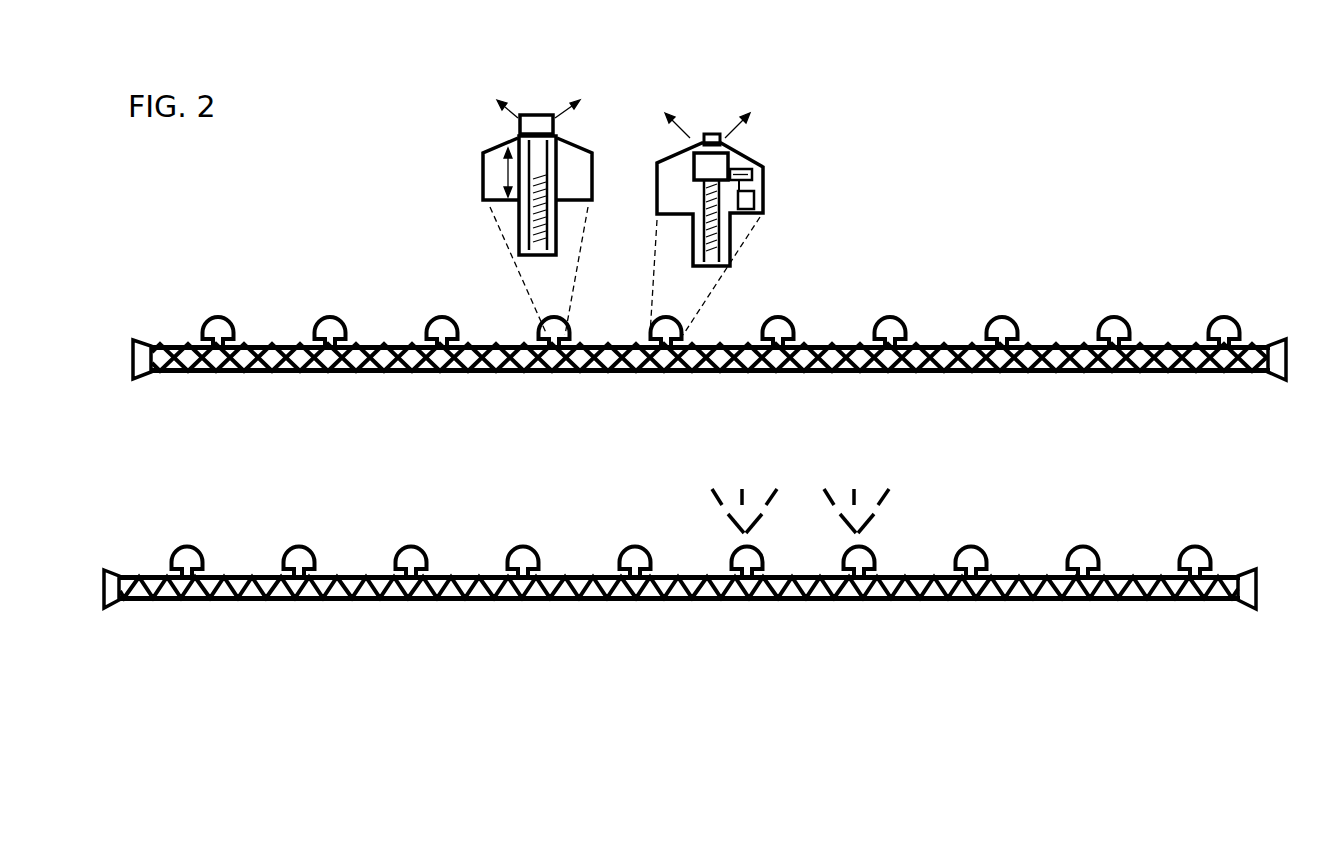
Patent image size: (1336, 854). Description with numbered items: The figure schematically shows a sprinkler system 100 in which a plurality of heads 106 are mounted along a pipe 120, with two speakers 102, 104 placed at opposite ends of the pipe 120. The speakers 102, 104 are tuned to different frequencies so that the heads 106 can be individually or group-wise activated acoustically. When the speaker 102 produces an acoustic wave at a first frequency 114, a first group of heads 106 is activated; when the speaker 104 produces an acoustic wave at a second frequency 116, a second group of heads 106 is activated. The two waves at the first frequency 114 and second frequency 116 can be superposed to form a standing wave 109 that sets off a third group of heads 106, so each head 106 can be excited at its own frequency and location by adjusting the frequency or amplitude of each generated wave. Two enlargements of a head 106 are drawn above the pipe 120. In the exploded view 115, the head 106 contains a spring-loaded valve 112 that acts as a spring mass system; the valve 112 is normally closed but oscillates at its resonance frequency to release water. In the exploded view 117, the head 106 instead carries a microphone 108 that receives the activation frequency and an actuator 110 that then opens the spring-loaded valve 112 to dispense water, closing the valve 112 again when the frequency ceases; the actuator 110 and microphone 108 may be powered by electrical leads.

The sprinkler system 100 is at (997, 161).
The speaker 102 is at (143, 343).
The speaker 104 is at (1283, 382).
The head 106 is at (712, 62).
The microphone 108 is at (760, 203).
The standing wave 109 is at (547, 602).
The actuator 110 is at (763, 168).
The spring-loaded valve 112 is at (557, 136).
The first frequency 114 is at (527, 374).
The exploded view 115 is at (423, 130).
The second frequency 116 is at (893, 374).
The exploded view 117 is at (784, 126).
The pipe 120 is at (770, 374).